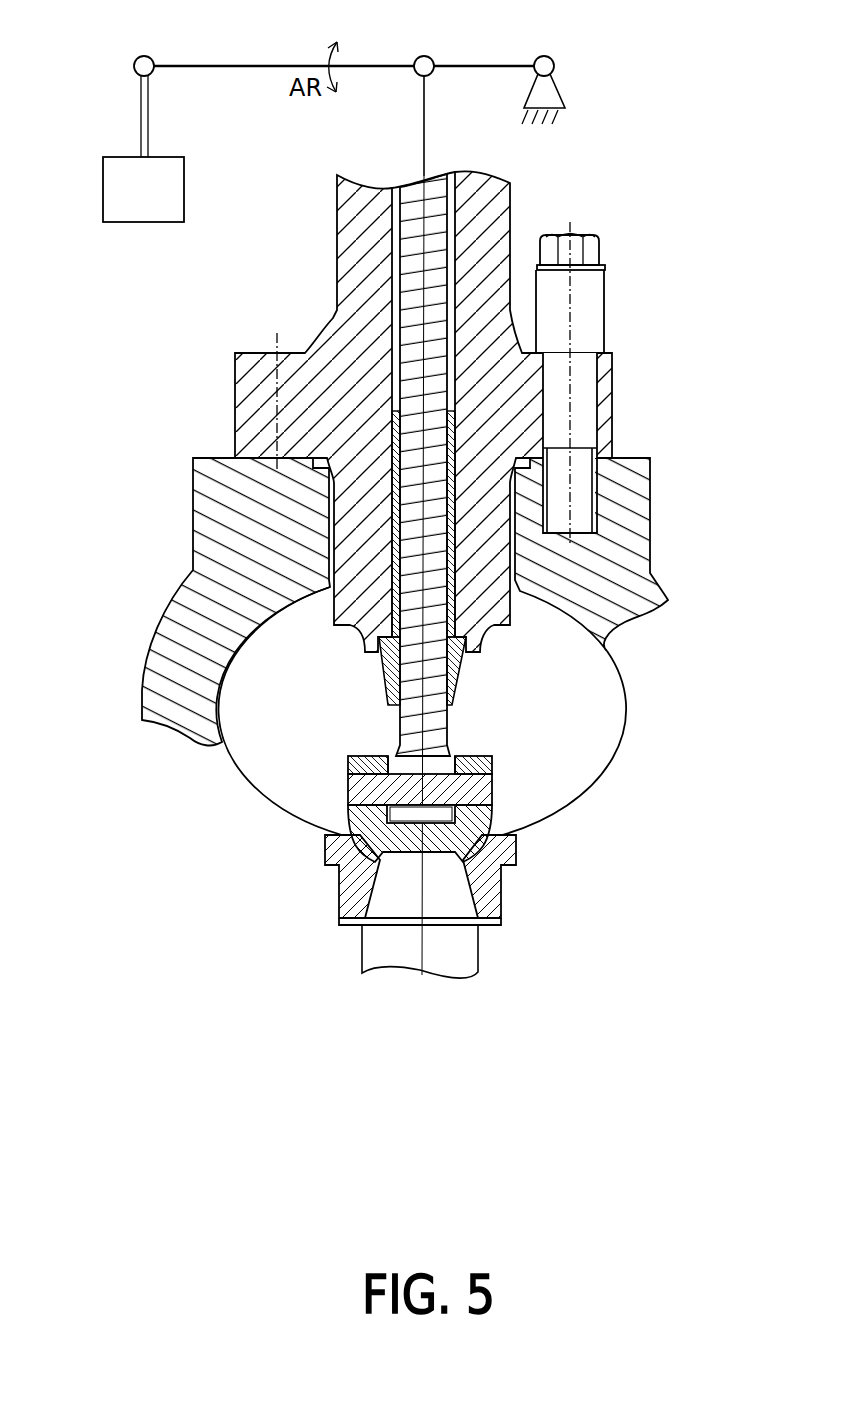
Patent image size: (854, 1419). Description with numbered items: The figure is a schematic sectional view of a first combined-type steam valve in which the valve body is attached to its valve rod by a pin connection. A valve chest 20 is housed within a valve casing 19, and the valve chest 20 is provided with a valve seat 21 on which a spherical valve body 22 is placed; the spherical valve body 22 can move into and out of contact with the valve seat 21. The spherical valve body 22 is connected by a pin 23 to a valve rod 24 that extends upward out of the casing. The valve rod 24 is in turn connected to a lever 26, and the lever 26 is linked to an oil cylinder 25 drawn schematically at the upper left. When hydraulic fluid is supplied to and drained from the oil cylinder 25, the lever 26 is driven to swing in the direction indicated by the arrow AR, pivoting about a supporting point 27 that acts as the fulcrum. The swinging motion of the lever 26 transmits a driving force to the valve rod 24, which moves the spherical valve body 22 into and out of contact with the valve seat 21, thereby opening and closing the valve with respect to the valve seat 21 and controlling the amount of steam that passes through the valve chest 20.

The valve casing 19 is at (155, 652).
The valve chest 20 is at (272, 787).
The valve seat 21 is at (338, 898).
The spherical valve body 22 is at (493, 823).
The pin 23 is at (497, 787).
The valve rod 24 is at (433, 730).
The oil cylinder 25 is at (103, 190).
The lever 26 is at (227, 66).
The supporting point 27 is at (546, 56).